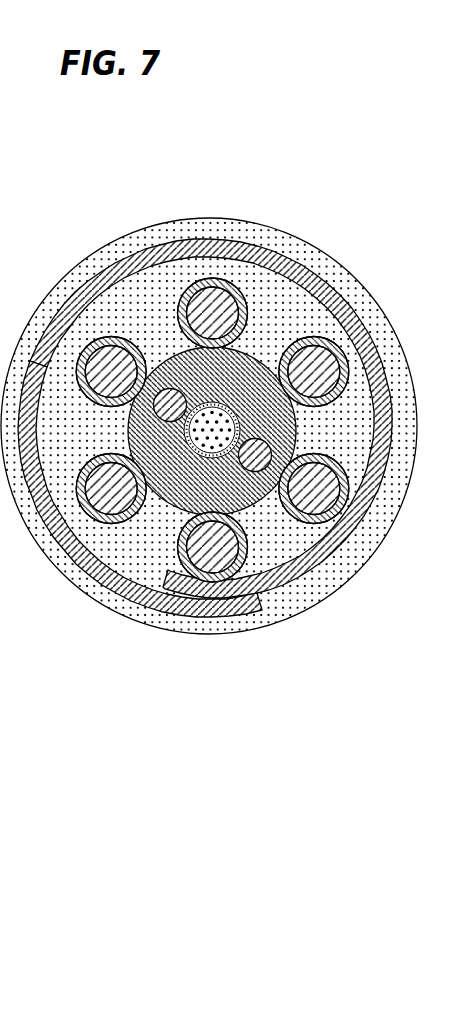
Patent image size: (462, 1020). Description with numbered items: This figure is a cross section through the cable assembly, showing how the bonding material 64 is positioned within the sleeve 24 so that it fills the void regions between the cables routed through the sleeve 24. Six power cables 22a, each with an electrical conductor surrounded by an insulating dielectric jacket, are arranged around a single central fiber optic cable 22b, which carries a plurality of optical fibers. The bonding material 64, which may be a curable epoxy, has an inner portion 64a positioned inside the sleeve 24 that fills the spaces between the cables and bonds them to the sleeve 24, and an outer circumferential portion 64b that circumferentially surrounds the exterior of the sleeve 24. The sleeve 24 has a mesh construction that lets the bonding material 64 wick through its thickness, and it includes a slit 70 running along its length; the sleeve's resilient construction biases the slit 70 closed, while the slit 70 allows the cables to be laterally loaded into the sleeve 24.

The power cables 22a is at (214, 280).
The fiber optic cable 22b is at (257, 360).
The sleeve 24 is at (123, 258).
The bonding material 64 is at (386, 311).
The inner portion 64a is at (167, 290).
The outer circumferential portion 64b is at (377, 530).
The slit 70 is at (212, 603).